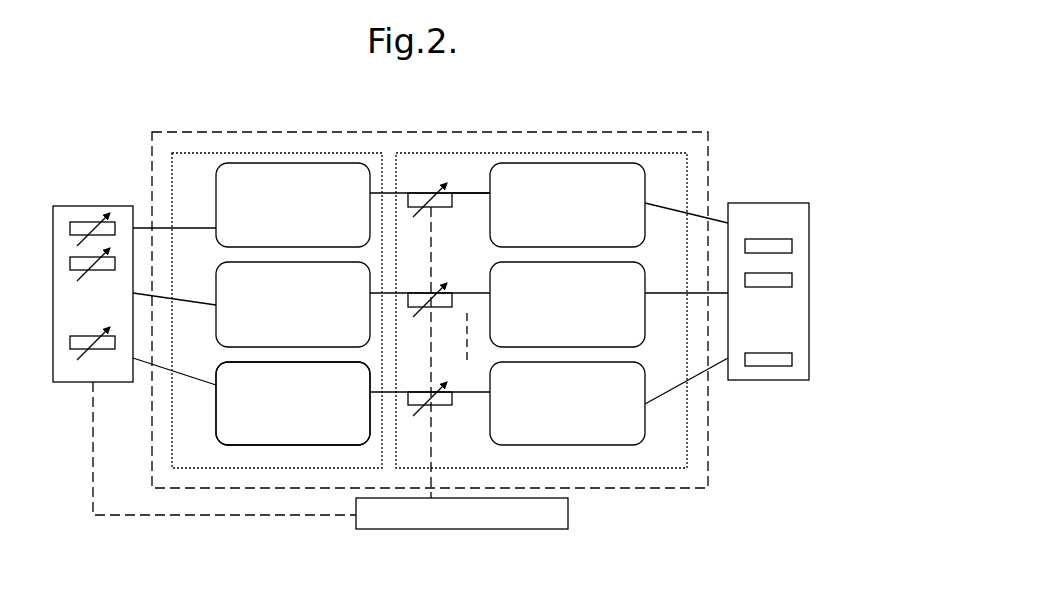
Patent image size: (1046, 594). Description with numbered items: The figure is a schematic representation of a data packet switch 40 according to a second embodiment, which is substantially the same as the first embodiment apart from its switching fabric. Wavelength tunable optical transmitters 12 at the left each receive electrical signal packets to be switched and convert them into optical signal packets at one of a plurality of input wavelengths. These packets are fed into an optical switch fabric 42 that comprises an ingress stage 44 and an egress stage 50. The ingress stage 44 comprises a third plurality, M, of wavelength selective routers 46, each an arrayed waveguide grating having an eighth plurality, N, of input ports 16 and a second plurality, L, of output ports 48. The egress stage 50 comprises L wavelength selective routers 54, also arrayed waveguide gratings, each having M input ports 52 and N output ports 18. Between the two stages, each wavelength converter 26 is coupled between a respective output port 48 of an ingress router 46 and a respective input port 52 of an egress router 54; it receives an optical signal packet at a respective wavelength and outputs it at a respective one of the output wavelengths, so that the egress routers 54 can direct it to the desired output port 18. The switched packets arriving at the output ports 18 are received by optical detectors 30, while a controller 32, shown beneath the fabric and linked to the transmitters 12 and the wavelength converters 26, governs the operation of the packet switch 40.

The wavelength tunable optical transmitters 12 is at (86, 222).
The input ports 16 is at (216, 385).
The output ports 18 is at (645, 203).
The wavelength converter 26 is at (448, 407).
The optical detectors 30 is at (765, 380).
The controller 32 is at (533, 522).
The packet switch 40 is at (556, 124).
The optical switch fabric 42 is at (253, 143).
The ingress stage 44 is at (227, 457).
The wavelength selective routers 46 is at (306, 436).
The output ports 48 is at (373, 192).
The egress stage 50 is at (635, 460).
The input ports 52 is at (488, 193).
The wavelength selective routers 54 is at (598, 168).